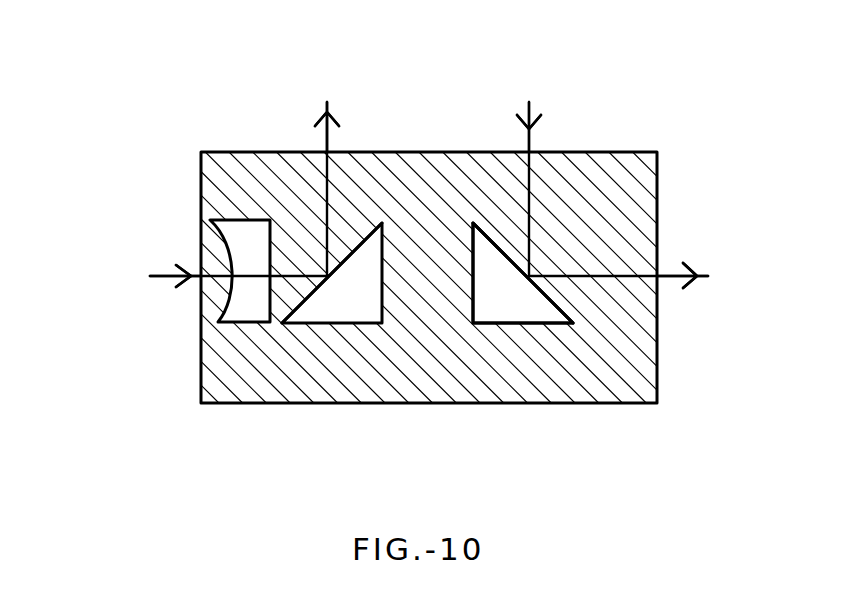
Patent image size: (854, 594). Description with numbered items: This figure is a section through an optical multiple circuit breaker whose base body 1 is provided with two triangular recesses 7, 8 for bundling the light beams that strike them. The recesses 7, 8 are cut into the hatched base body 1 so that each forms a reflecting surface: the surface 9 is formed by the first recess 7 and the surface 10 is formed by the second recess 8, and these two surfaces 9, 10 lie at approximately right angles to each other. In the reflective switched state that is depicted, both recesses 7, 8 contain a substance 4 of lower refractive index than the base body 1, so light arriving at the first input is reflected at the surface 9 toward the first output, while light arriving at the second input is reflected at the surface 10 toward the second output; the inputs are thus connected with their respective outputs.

The base body 1 is at (241, 147).
The substance of lower refractive index 4 is at (484, 284).
The triangular recess 7 is at (282, 323).
The triangular recess 8 is at (530, 323).
The surface 9 is at (304, 301).
The surface 10 is at (553, 297).